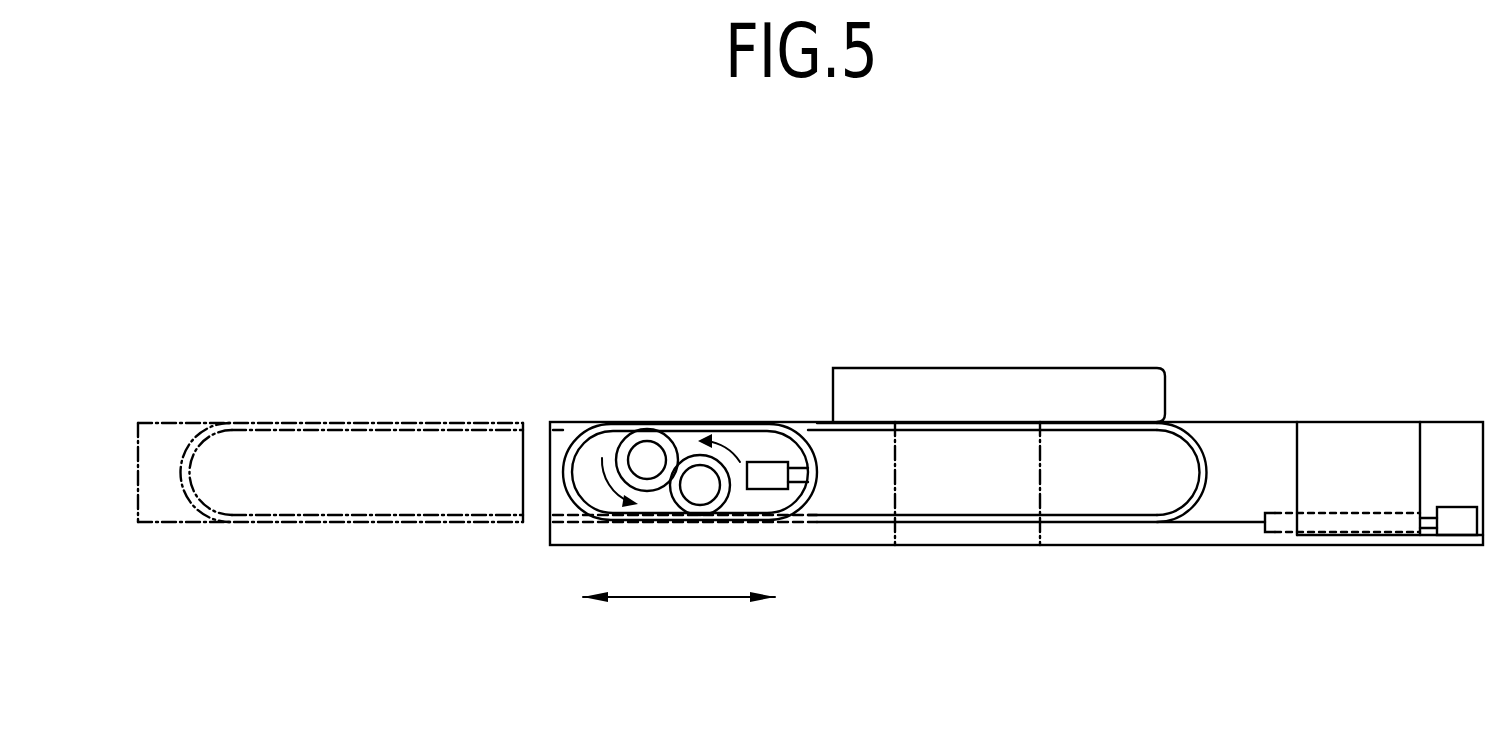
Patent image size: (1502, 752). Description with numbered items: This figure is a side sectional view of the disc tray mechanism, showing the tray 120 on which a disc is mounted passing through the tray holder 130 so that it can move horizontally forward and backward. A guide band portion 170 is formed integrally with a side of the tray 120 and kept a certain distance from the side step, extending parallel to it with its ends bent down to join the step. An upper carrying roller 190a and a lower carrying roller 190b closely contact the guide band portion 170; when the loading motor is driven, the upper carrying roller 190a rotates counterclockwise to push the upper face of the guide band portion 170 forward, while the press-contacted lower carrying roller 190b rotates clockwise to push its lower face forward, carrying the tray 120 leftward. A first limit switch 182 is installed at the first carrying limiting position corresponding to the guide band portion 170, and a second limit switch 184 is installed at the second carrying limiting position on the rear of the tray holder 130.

The tray 120 is at (243, 389).
The tray holder 130 is at (1205, 342).
The guide band portion 170 is at (1100, 520).
The first limit switch 182 is at (763, 460).
The second limit switch 184 is at (1457, 528).
The upper carrying roller 190a is at (645, 435).
The lower carrying roller 190b is at (688, 462).